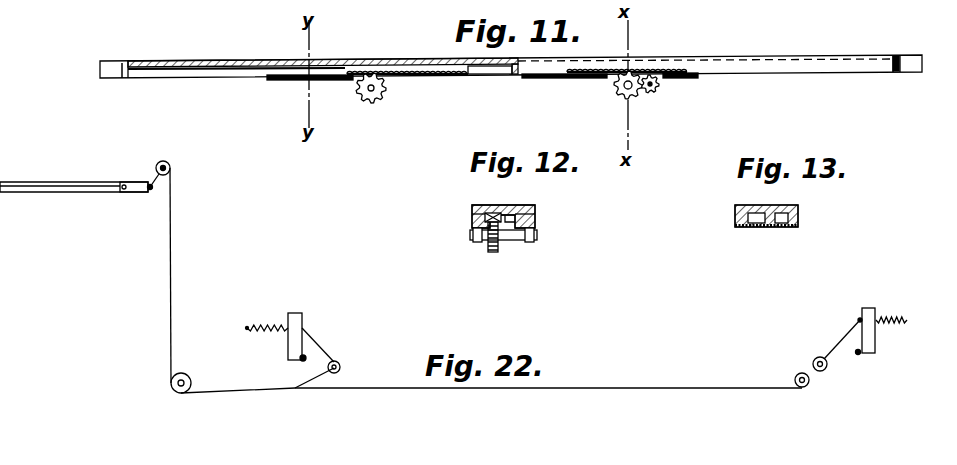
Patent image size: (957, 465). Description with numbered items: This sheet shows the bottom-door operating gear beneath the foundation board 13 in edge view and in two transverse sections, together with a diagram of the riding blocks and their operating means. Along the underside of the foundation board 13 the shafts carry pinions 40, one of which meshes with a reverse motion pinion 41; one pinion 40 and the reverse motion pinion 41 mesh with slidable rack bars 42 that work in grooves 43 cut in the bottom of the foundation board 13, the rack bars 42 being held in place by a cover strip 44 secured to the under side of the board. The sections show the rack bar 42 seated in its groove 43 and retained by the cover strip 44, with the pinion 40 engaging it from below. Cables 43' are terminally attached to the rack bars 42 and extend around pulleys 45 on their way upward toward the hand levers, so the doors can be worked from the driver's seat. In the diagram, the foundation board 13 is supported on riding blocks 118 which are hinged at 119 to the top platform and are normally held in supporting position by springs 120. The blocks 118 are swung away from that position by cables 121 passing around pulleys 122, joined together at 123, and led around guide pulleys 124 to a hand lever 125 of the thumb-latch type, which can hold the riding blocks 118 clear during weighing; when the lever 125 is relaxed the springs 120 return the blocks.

In FIG. 12, the foundation board 13 is at (482, 207).
In FIG. 13, the foundation board 13 is at (735, 207).
In FIG. 11, the pinion 40 is at (383, 98).
In FIG. 12, the pinion 40 is at (493, 252).
In FIG. 11, the reverse motion pinion 41 is at (620, 92).
In FIG. 11, the slidable rack bar 42 is at (418, 61).
In FIG. 12, the slidable rack bar 42 is at (495, 213).
In FIG. 11, the groove 43 is at (618, 75).
In FIG. 12, the groove 43 is at (505, 209).
In FIG. 13, the groove 43 is at (759, 216).
In FIG. 11, the cable 43' is at (235, 68).
In FIG. 11, the cover strip 44 is at (283, 80).
In FIG. 13, the cover strip 44 is at (756, 228).
In FIG. 11, the pulley 45 is at (122, 78).
In FIG. 22, the riding block 118 is at (292, 342).
In FIG. 22, the hinge 119 is at (858, 355).
In FIG. 22, the spring 120 is at (269, 321).
In FIG. 22, the cable 121 is at (170, 295).
In FIG. 22, the pulley 122 is at (341, 367).
In FIG. 22, the junction 123 is at (294, 391).
In FIG. 22, the guide pulley 124 is at (164, 161).
In FIG. 22, the hand lever 125 is at (60, 192).